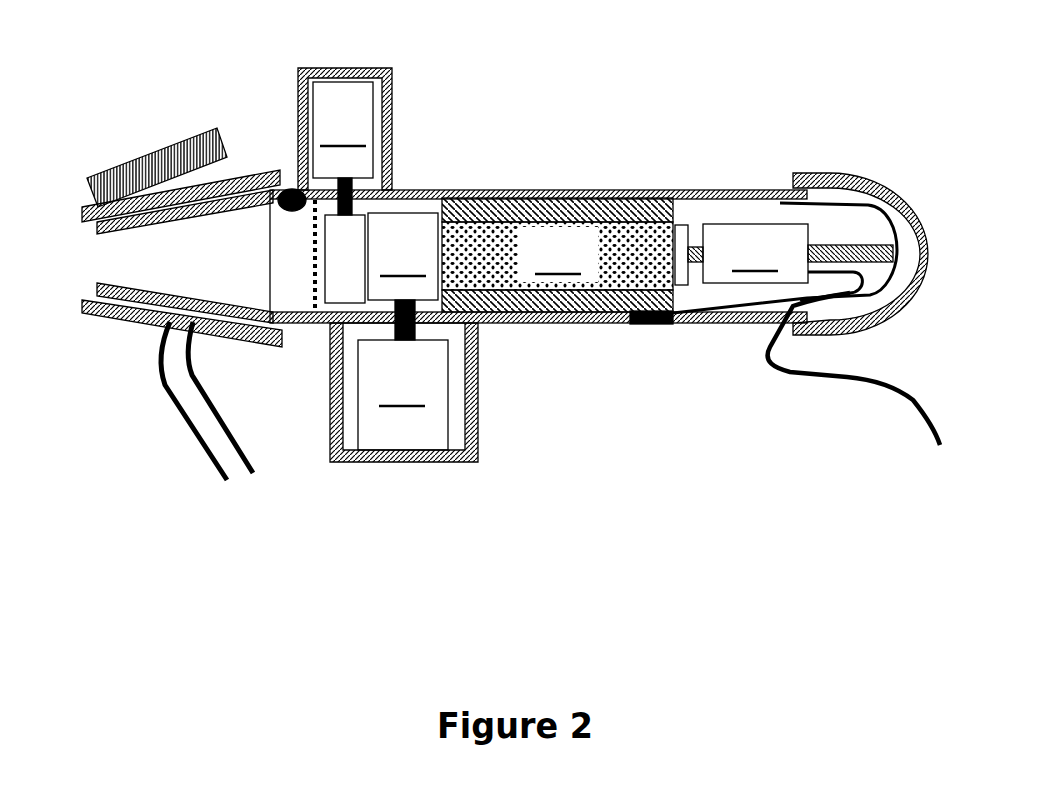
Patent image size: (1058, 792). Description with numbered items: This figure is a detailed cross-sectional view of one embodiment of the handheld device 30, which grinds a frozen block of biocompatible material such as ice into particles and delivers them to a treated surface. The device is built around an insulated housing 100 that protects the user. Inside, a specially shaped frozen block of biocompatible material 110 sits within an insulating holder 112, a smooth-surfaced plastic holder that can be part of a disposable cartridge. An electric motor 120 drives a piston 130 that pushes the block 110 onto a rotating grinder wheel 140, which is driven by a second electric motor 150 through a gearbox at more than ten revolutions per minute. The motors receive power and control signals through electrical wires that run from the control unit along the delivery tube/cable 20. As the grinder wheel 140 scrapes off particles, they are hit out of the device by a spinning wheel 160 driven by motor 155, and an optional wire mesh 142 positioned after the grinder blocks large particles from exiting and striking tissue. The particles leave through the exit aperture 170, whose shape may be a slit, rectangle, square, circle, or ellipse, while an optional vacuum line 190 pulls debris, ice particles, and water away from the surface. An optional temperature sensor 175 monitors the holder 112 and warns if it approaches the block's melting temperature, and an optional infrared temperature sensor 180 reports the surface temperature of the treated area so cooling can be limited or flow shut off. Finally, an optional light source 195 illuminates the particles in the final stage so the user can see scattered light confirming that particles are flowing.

The delivery tube/cable 20 is at (913, 405).
The handheld device 30 is at (632, 122).
The housing 100 is at (577, 189).
The frozen block of biocompatible material 110 is at (557, 256).
The insulating holder 112 is at (509, 204).
The electric motor 120 is at (798, 253).
The piston 130 is at (689, 221).
The grinder wheel 140 is at (403, 276).
The wire mesh 142 is at (311, 282).
The second electric motor 150 is at (404, 392).
The motor 155 is at (345, 141).
The spinning wheel 160 is at (359, 213).
The exit aperture 170 is at (95, 264).
The temperature sensor 175 is at (647, 326).
The infrared temperature sensor 180 is at (163, 153).
The vacuum line 190 is at (241, 471).
The light source 195 is at (291, 189).